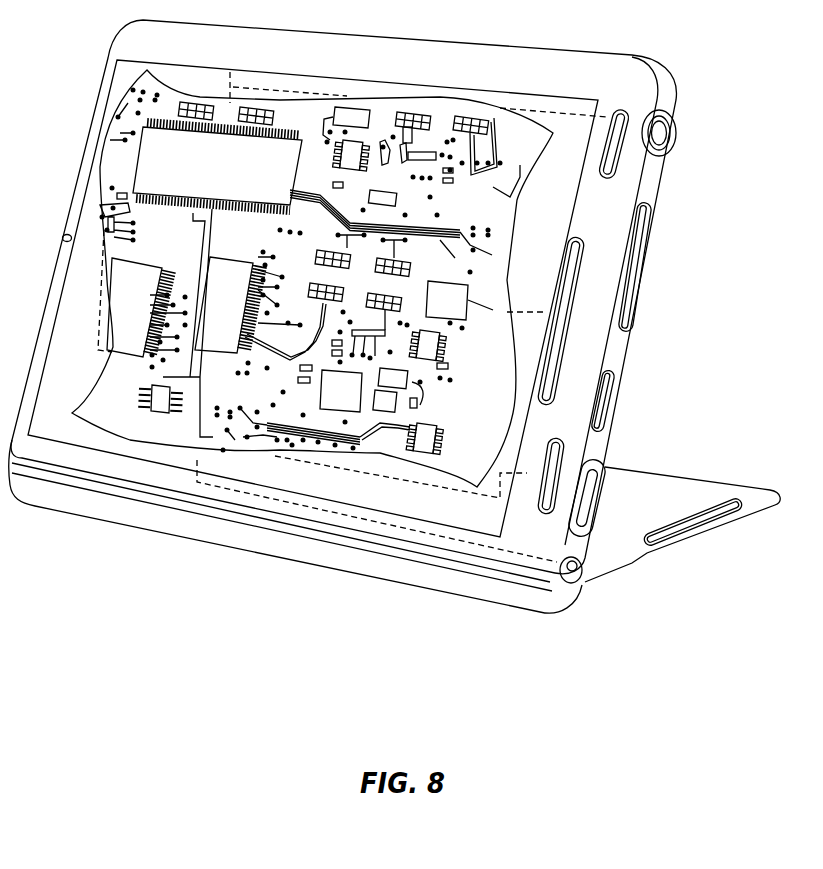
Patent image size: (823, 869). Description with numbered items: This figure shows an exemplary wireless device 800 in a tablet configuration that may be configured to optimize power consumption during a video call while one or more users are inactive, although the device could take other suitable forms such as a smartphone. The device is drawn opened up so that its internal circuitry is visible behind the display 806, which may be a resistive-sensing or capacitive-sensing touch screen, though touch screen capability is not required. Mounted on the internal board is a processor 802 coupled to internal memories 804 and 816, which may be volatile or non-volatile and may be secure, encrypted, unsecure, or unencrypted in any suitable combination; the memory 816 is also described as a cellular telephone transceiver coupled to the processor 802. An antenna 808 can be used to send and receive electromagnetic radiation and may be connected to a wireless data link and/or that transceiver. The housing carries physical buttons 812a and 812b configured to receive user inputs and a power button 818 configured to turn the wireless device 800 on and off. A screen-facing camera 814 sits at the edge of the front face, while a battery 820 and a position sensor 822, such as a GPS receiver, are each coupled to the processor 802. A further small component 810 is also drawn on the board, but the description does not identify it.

The wireless device 800 is at (618, 52).
The processor 802 is at (233, 176).
The internal memory 804 is at (154, 290).
The display 806 is at (465, 90).
The antenna 808 is at (578, 578).
The integrated circuit component 810 is at (160, 396).
The physical button 812a is at (618, 150).
The physical button 812b is at (550, 460).
The screen-facing camera 814 is at (63, 235).
The internal memory 816 is at (244, 301).
The power button 818 is at (672, 130).
The battery 820 is at (360, 107).
The position sensor 822 is at (466, 297).